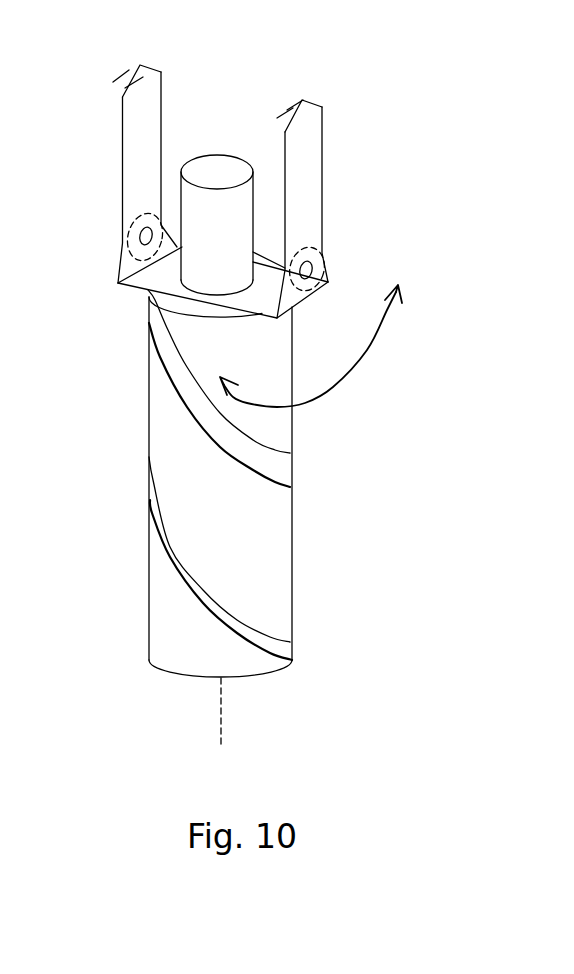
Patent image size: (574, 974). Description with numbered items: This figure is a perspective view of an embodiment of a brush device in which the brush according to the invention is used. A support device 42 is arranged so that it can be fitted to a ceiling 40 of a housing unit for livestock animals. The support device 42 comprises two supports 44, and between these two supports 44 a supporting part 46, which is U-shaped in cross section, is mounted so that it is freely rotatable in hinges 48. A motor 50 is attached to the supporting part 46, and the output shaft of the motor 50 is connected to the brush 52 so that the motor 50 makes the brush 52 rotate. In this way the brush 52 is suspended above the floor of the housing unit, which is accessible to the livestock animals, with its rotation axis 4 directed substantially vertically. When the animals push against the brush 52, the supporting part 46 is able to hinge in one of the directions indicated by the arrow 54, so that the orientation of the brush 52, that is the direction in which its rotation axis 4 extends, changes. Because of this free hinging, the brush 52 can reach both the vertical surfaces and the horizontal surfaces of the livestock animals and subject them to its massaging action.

The rotation axis 4 is at (223, 712).
The ceiling 40 is at (235, 172).
The support device 42 is at (352, 216).
The supports 44 is at (142, 178).
The supporting part 46 is at (297, 302).
The hinges 48 is at (146, 237).
The motor 50 is at (233, 200).
The brush 52 is at (277, 540).
The arrow 54 is at (365, 365).